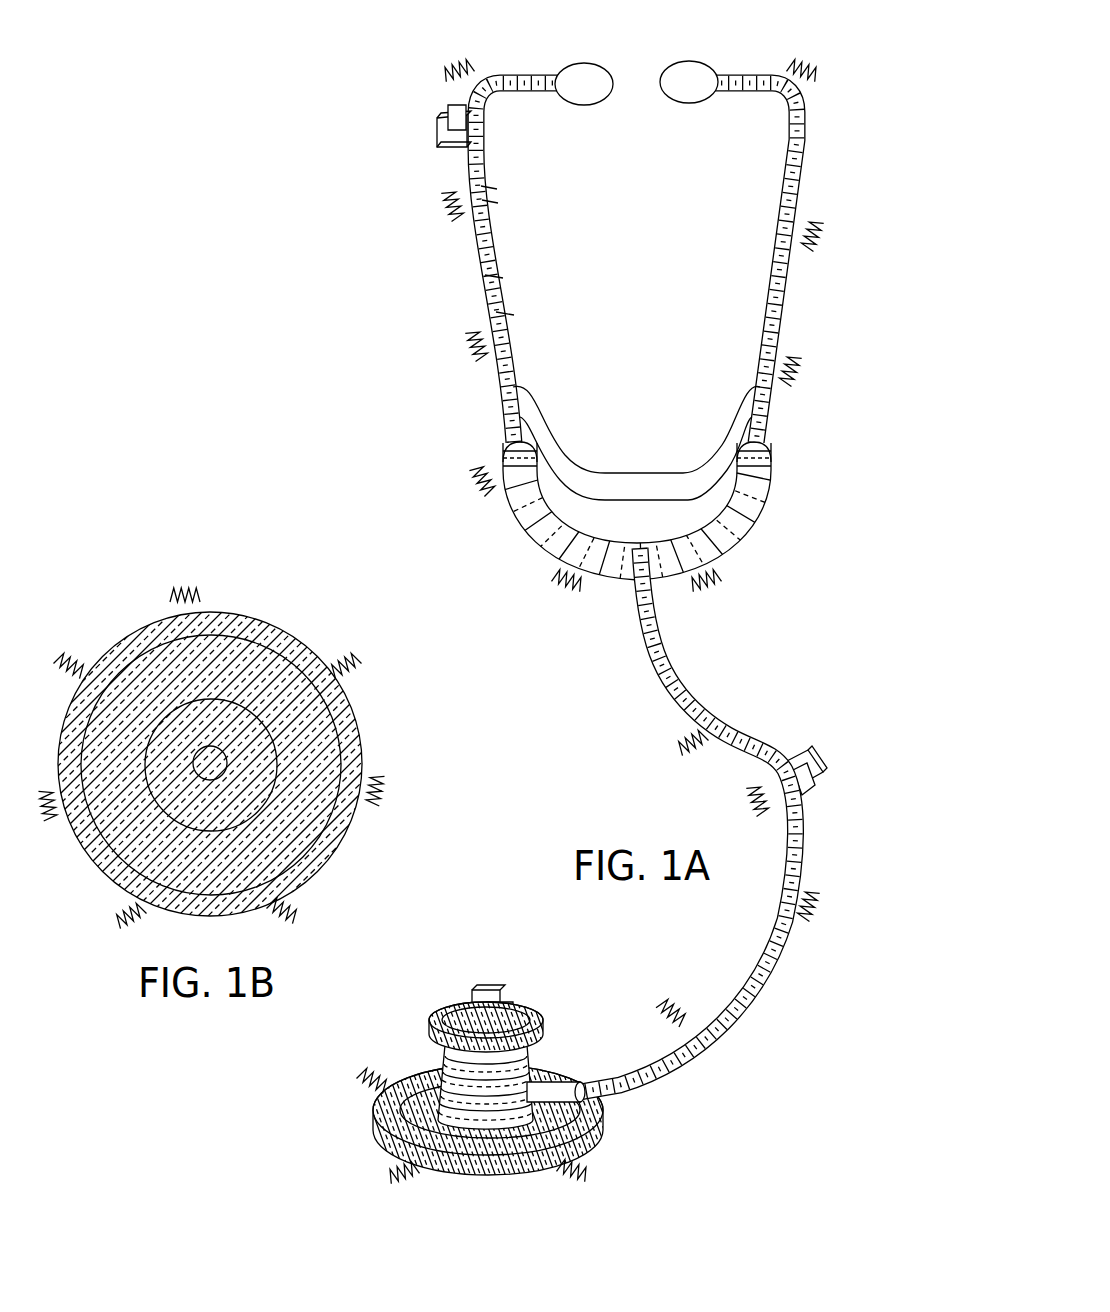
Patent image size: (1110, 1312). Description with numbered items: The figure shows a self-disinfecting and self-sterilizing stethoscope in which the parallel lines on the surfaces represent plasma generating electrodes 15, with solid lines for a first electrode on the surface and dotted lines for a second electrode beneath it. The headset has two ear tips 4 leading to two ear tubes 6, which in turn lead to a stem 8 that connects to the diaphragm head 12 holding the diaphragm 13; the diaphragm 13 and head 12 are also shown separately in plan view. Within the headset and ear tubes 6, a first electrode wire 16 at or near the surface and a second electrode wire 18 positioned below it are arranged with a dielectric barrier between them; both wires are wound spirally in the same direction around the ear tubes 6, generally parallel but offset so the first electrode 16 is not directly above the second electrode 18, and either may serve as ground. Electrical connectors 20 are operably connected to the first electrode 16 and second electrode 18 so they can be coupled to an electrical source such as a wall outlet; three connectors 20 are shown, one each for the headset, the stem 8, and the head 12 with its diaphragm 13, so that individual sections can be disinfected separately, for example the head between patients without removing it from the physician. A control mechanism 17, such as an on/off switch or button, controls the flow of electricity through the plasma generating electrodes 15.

In FIG. 1A, the ear tips 4 is at (585, 63).
In FIG. 1A, the ear tubes 6 is at (775, 263).
In FIG. 1A, the stem 8 is at (667, 702).
In FIG. 1A, the diaphragm head 12 is at (418, 1107).
In FIG. 1B, the diaphragm head 12 is at (247, 618).
In FIG. 1B, the diaphragm 13 is at (173, 653).
In FIG. 1A, the plasma generating electrodes 15 is at (488, 200).
In FIG. 1A, the first electrode wire 16 is at (485, 300).
In FIG. 1A, the control mechanism 17 is at (458, 110).
In FIG. 1A, the second electrode wire 18 is at (502, 313).
In FIG. 1A, the electrical connector 20 is at (448, 142).